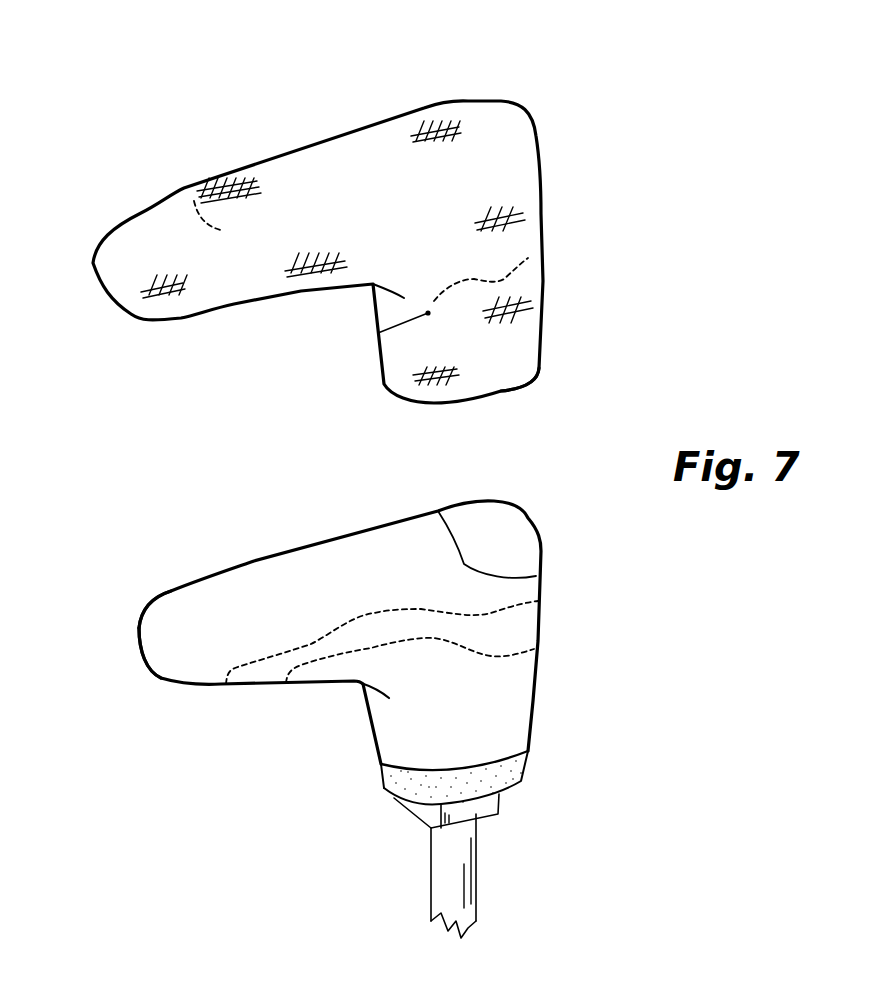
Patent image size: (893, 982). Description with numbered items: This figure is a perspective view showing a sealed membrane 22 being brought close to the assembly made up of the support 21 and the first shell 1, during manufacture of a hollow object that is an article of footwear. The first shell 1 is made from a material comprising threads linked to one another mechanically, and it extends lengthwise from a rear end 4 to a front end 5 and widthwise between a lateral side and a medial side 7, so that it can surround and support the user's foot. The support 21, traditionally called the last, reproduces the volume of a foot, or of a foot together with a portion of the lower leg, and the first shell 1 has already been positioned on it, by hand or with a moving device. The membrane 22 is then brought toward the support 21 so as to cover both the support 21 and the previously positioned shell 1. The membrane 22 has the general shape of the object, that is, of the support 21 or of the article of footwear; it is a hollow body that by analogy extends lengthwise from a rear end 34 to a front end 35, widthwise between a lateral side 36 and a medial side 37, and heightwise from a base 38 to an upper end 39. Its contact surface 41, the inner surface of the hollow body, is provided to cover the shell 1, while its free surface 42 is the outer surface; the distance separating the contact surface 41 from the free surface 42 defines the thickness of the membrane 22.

The first shell 1 is at (440, 505).
The rear end 4 is at (527, 517).
The front end 5 is at (143, 660).
The medial side 7 is at (263, 630).
The support 21 is at (527, 763).
The sealed membrane 22 is at (423, 107).
The rear end 34 is at (535, 130).
The front end 35 is at (97, 283).
The lateral side 36 is at (193, 183).
The medial side 37 is at (252, 240).
The base 38 is at (338, 156).
The upper end 39 is at (503, 390).
The contact surface 41 is at (524, 256).
The free surface 42 is at (377, 332).